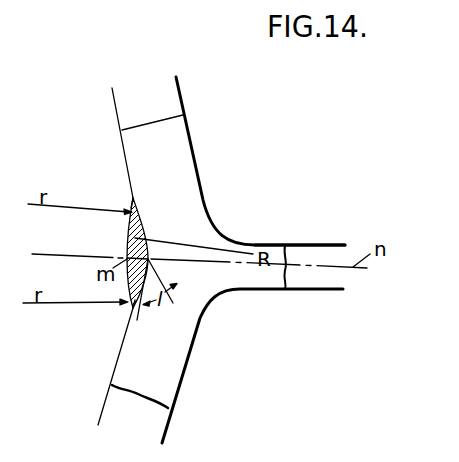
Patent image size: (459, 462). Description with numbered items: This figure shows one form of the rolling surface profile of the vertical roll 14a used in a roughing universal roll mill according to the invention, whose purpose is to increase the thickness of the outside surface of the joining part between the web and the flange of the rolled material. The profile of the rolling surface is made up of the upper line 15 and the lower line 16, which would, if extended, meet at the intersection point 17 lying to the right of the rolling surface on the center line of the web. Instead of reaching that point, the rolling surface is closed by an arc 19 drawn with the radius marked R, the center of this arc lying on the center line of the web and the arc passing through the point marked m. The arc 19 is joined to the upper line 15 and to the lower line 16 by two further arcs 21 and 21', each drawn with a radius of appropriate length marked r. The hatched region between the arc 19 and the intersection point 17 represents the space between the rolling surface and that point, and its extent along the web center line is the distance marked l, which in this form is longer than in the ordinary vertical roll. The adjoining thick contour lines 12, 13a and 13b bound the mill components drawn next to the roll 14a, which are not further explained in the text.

The upper nozzle wall 12 is at (183, 147).
The upper channel portion 13a is at (308, 200).
The lower channel portion 13b is at (298, 364).
The vertical roll 14a is at (52, 372).
The upper line 15 is at (110, 106).
The lower line 16 is at (100, 415).
The intersection point 17 is at (150, 261).
The arc 19 is at (141, 240).
The arc 21 is at (161, 212).
The arc 21' is at (148, 321).